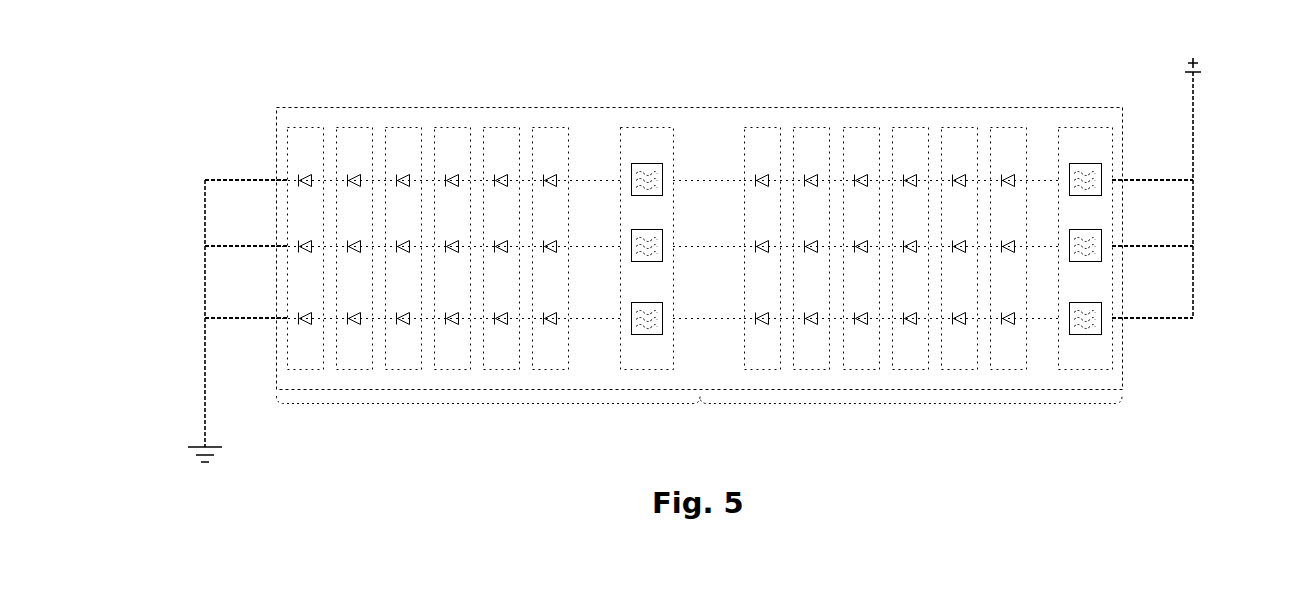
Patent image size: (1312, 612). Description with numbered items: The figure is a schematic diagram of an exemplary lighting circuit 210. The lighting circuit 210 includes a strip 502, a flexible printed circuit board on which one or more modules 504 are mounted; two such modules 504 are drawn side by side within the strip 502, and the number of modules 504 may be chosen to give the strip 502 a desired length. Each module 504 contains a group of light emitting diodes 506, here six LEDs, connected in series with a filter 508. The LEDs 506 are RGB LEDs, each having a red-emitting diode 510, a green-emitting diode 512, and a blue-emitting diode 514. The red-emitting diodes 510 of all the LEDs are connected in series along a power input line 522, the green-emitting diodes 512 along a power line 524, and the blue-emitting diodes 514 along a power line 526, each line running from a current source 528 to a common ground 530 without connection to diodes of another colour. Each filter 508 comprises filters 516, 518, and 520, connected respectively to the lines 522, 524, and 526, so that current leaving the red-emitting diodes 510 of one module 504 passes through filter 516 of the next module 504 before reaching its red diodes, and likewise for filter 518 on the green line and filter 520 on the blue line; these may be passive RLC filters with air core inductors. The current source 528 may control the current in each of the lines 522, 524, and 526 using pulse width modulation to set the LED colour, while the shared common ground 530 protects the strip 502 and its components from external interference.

The lighting circuit 210 is at (1260, 117).
The strip 502 is at (300, 107).
The module 504 is at (700, 420).
The light emitting diodes 506 is at (550, 127).
The filter 508 is at (648, 126).
The red-emitting diode 510 is at (296, 172).
The green-emitting diode 512 is at (296, 238).
The blue-emitting diode 514 is at (296, 310).
The filter 516 is at (660, 163).
The filter 518 is at (660, 229).
The filter 520 is at (660, 302).
The power input line 522 is at (1152, 164).
The power line 524 is at (1152, 233).
The power line 526 is at (1152, 304).
The current source 528 is at (1194, 172).
The common ground 530 is at (204, 335).